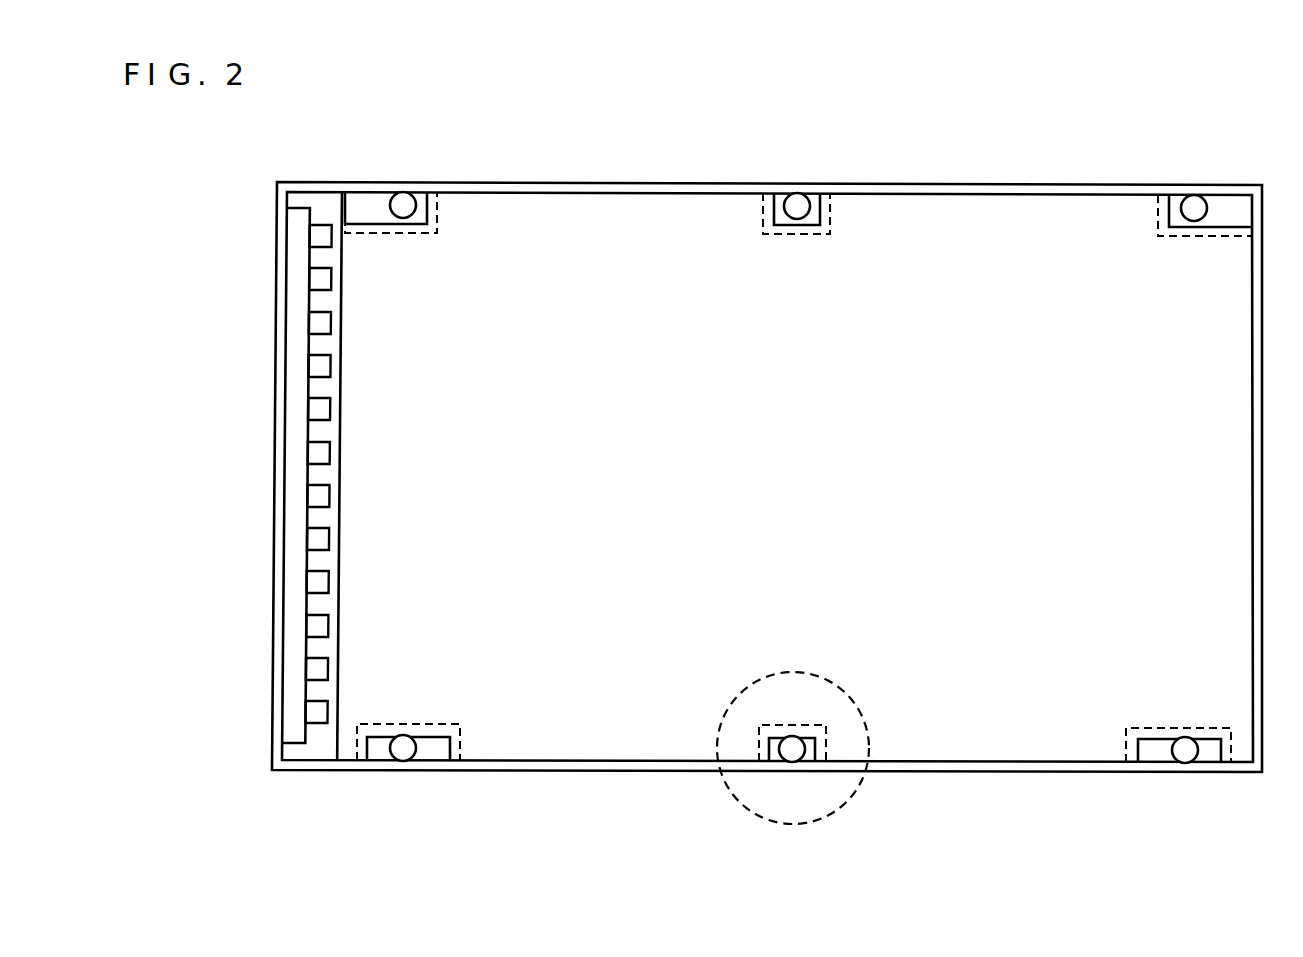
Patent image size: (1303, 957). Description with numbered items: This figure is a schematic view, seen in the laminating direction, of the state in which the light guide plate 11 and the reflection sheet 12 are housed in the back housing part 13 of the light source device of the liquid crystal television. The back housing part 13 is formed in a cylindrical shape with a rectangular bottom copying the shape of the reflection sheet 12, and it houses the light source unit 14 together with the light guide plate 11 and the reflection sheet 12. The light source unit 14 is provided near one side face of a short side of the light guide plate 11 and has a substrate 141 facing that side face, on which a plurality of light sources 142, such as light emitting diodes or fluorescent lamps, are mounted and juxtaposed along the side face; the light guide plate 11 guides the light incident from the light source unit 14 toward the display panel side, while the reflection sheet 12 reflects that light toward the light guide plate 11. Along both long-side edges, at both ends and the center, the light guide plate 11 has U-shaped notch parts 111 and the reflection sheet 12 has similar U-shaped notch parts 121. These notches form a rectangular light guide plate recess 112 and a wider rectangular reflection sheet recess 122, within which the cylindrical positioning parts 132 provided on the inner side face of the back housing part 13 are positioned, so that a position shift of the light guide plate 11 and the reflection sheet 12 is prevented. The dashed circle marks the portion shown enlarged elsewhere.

The light guide plate 11 is at (1072, 215).
The reflection sheet 12 is at (985, 222).
The back housing part 13 is at (896, 183).
The light source unit 14 is at (252, 439).
The notch part 111 is at (465, 193).
The light guide plate recess 112 is at (367, 193).
The notch part 121 is at (805, 235).
The reflection sheet recess 122 is at (380, 229).
The positioning part 132 is at (403, 192).
The substrate 141 is at (286, 710).
The light source 142 is at (307, 587).